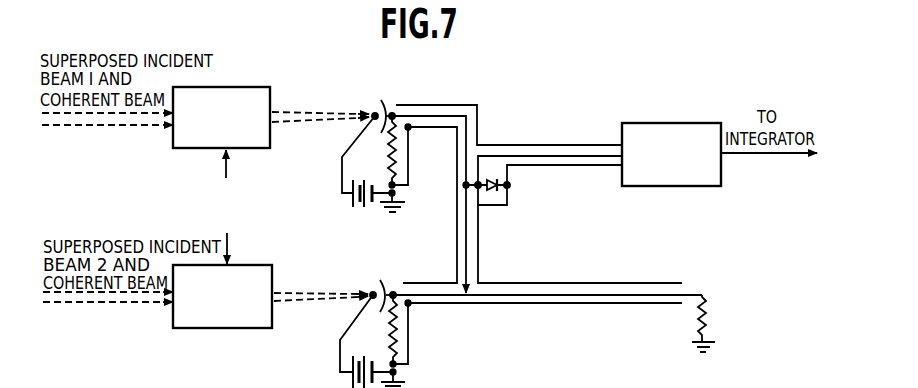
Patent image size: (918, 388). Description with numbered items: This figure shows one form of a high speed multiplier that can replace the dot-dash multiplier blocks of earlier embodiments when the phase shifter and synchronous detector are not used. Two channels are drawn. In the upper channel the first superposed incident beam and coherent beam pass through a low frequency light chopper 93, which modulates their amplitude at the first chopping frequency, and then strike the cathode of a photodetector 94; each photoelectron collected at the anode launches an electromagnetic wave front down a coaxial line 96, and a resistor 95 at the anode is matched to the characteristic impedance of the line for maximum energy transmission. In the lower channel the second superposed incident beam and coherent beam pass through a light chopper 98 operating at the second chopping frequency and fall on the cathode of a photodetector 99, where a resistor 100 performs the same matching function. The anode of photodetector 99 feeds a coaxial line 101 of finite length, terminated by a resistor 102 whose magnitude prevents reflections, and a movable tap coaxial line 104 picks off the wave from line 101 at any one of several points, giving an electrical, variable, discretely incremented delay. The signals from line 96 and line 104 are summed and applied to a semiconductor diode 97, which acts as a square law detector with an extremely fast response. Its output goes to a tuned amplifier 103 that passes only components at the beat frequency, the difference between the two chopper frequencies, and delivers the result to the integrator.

The light chopper 93 is at (249, 149).
The photodetector 94 is at (405, 91).
The resistor 95 is at (390, 166).
The line 96 is at (475, 104).
The semiconductor diode 97 is at (492, 191).
The light chopper 98 is at (220, 329).
The photodetector 99 is at (385, 271).
The resistor 100 is at (391, 342).
The coaxial line 101 is at (437, 283).
The resistor 102 is at (706, 320).
The amplifier 103 is at (643, 123).
The movable tap coaxial line 104 is at (479, 252).